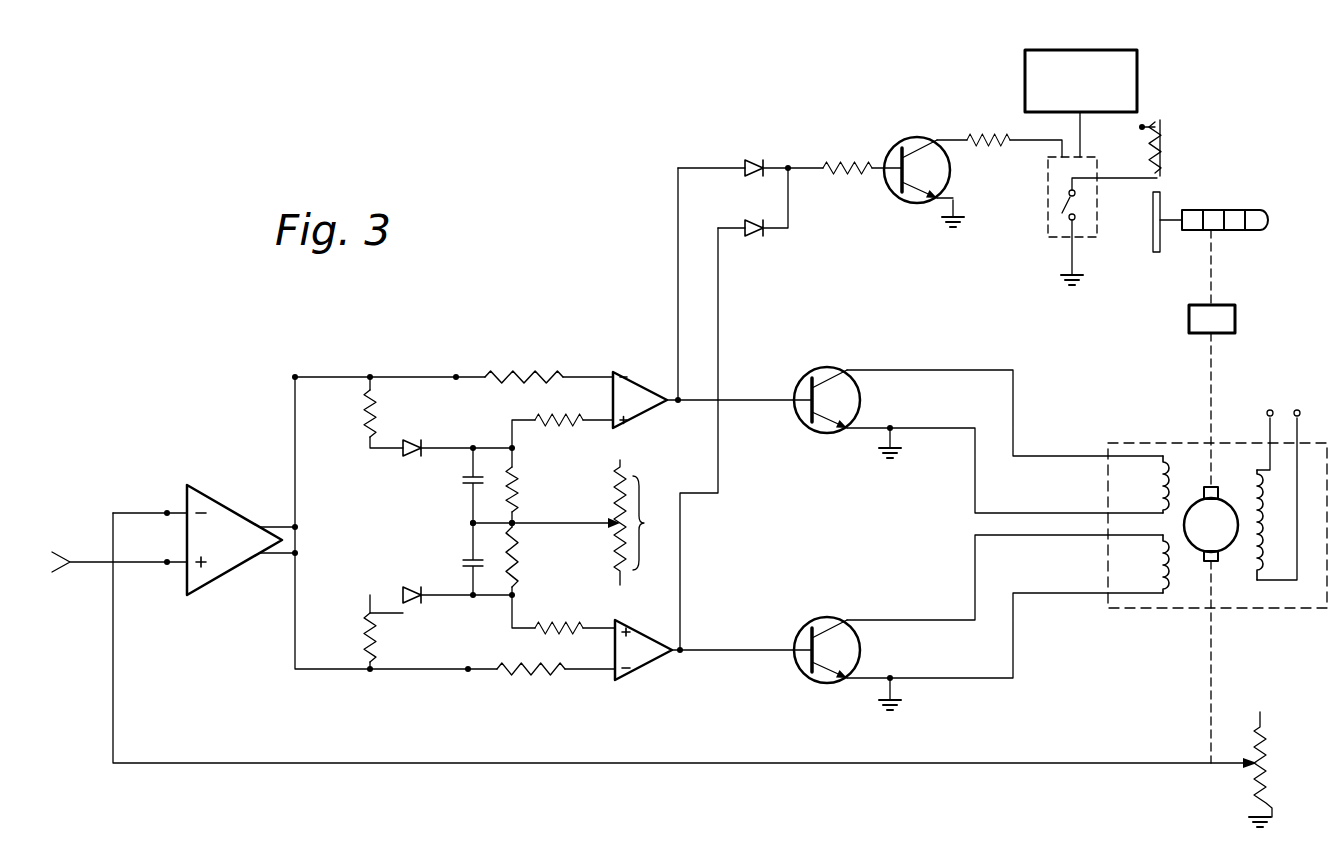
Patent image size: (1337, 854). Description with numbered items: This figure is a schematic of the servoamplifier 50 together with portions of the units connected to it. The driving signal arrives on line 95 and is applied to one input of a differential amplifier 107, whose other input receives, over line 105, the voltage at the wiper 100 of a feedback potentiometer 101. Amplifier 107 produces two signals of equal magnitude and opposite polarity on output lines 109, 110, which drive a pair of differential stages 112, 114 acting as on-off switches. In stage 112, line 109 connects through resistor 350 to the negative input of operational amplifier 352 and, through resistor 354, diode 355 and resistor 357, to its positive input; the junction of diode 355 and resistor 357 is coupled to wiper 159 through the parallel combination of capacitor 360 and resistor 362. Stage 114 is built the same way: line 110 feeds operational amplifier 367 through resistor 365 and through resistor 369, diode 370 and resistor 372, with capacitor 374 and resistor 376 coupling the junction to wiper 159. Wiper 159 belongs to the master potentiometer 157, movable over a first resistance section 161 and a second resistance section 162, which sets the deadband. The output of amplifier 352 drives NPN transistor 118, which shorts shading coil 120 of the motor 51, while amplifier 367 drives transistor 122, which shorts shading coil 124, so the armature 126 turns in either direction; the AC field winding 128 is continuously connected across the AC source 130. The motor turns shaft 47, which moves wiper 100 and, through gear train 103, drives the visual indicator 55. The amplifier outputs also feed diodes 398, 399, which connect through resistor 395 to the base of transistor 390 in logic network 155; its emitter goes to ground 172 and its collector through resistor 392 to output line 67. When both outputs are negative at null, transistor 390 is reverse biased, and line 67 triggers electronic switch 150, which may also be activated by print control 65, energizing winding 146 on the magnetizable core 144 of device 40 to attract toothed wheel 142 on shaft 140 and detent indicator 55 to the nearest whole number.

The line 95 is at (78, 567).
The line 105 is at (133, 513).
The differential amplifier 107 is at (253, 481).
The output line 109 is at (297, 490).
The output line 110 is at (297, 577).
The servoamplifier 50 is at (576, 316).
The resistor 350 is at (527, 376).
The resistor 354 is at (376, 410).
The diode 355 is at (430, 456).
The capacitor 360 is at (470, 502).
The resistor 357 is at (579, 417).
The resistor 362 is at (518, 470).
The resistor 376 is at (515, 548).
The capacitor 374 is at (462, 564).
The diode 370 is at (415, 608).
The resistor 369 is at (368, 640).
The resistor 365 is at (555, 676).
The resistor 372 is at (552, 636).
The differential stage 112 is at (633, 364).
The operational amplifier 352 is at (660, 407).
The differential stage 114 is at (658, 706).
The operational amplifier 367 is at (660, 660).
The first resistance section 161 is at (646, 503).
The master potentiometer 157 is at (615, 497).
The wiper 159 is at (570, 574).
The second resistance section 162 is at (640, 548).
The NPN-transistor 118 is at (812, 370).
The NPN-transistor 122 is at (843, 600).
The ground 172 is at (888, 448).
The diode 398 is at (757, 159).
The diode 399 is at (758, 222).
The resistor 395 is at (855, 162).
The logic network 155 is at (896, 129).
The NPN-transistor 390 is at (897, 189).
The resistor 392 is at (992, 144).
The output line 67 is at (1034, 138).
The print control 65 is at (1090, 50).
The electronic switch 150 is at (1048, 215).
The magnetizable core 144 is at (1162, 123).
The device 40 is at (1220, 154).
The winding 146 is at (1160, 177).
The toothed wheel 142 is at (1153, 250).
The shaft 140 is at (1170, 224).
The visual indicator 55 is at (1290, 190).
The gear train 103 is at (1235, 318).
The shaft 47 is at (1209, 372).
The shading coil 120 is at (1165, 453).
The shading coil 124 is at (1108, 562).
The motor 51 is at (1172, 608).
The armature 126 is at (1220, 560).
The AC field winding 128 is at (1255, 485).
The source 130 is at (1297, 432).
The wiper 100 is at (1242, 766).
The feedback potentiometer 101 is at (1268, 750).